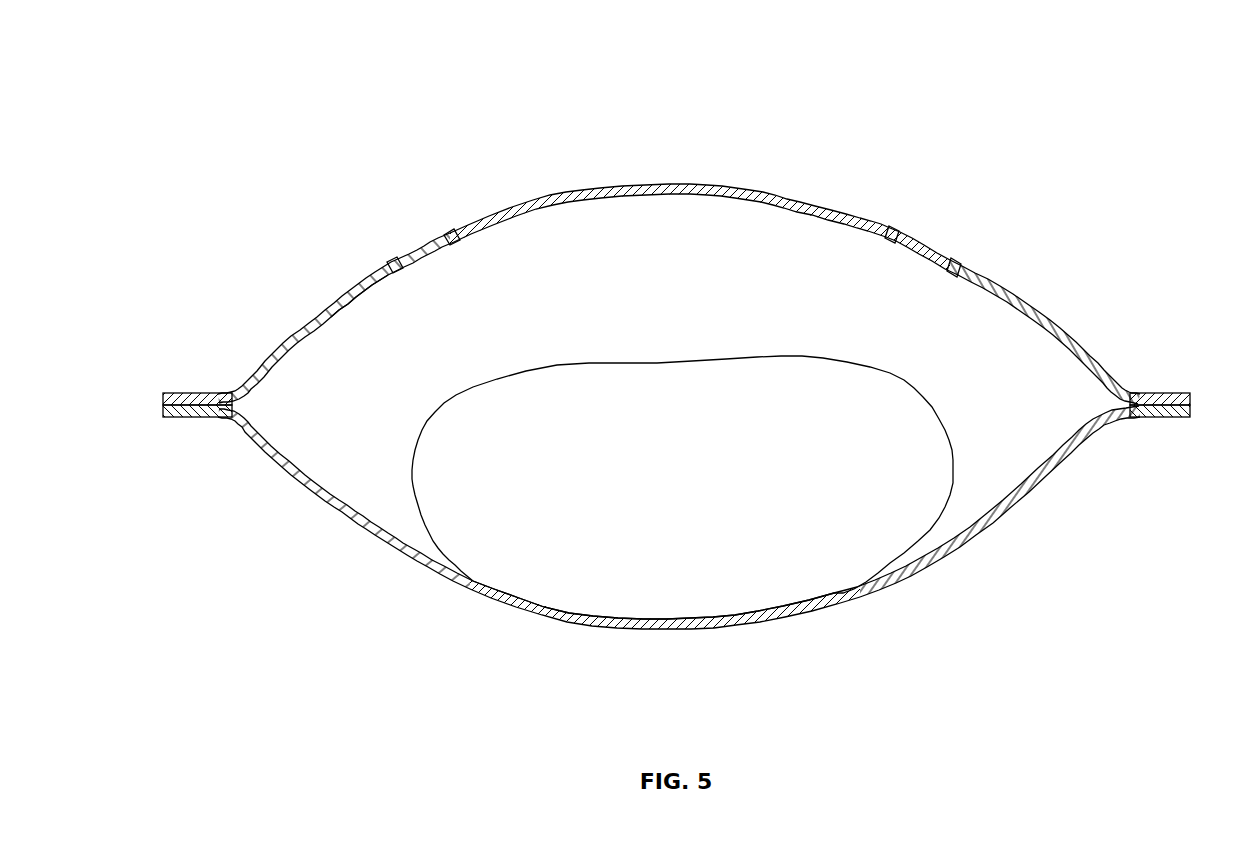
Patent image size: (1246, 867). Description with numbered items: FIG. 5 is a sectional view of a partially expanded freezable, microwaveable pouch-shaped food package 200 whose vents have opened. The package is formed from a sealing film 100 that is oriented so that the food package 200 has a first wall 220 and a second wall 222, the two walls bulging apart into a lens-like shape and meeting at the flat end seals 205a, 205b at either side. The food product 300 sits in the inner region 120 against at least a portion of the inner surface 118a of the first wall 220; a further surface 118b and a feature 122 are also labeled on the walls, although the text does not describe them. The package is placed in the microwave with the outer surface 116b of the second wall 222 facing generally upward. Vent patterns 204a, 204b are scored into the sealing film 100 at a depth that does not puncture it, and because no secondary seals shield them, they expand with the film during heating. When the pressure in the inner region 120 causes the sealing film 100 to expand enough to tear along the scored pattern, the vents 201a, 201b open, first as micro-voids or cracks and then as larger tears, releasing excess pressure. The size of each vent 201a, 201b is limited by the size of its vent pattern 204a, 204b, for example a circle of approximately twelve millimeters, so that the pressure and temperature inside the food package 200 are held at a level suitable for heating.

The sealing film 100 is at (668, 182).
The outer surface of the second wall 116b is at (537, 196).
The inner surface of the first sidewall 118a is at (313, 481).
The wall surface 118b is at (313, 332).
The inner region 120 is at (980, 317).
The inner layer 122 is at (368, 315).
The food package 200 is at (1097, 117).
The vent 201a is at (457, 244).
The vent 201b is at (892, 244).
The vent pattern 204a is at (447, 232).
The vent pattern 204b is at (897, 226).
The end seal 205a is at (190, 391).
The end seal 205b is at (1160, 392).
The first wall 220 is at (1008, 523).
The second wall 222 is at (999, 266).
The food product 300 is at (652, 378).